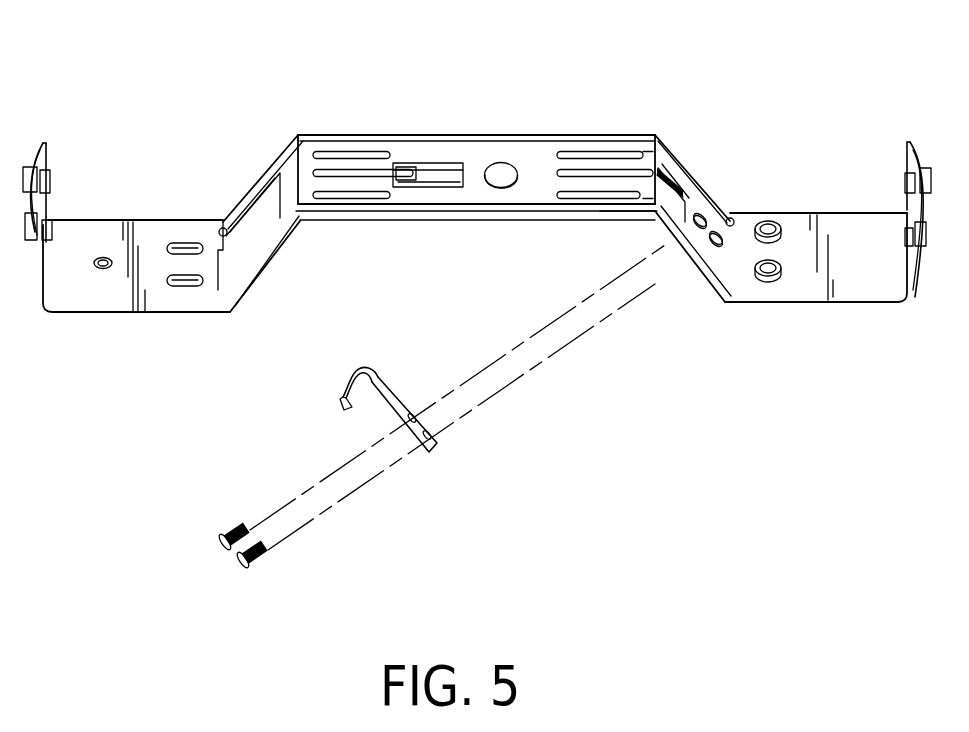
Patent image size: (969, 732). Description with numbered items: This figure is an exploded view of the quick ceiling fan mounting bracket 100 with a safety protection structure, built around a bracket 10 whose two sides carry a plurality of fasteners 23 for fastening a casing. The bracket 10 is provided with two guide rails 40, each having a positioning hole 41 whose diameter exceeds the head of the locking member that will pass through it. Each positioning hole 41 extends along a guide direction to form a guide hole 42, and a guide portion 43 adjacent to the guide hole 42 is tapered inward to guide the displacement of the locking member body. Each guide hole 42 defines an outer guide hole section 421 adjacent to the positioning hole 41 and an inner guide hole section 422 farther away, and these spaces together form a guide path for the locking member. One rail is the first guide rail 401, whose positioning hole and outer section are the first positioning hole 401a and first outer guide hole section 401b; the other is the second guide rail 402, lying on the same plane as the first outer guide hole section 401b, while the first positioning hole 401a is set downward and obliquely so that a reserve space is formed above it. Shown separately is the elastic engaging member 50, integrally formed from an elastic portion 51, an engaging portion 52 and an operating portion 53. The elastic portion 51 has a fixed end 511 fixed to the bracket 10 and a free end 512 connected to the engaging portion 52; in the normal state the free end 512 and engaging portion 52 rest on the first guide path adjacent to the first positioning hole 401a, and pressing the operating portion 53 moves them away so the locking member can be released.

The bracket 10 is at (847, 213).
The fasteners 23 is at (25, 167).
The guide rails 40 is at (423, 158).
The positioning hole 41 is at (452, 175).
The guide hole 42 is at (327, 174).
The guide portion 43 is at (403, 165).
The elastic engaging member 50 is at (398, 441).
The elastic portion 51 is at (423, 443).
The engaging portion 52 is at (357, 373).
The operating portion 53 is at (340, 402).
The quick ceiling fan mounting bracket 100 is at (147, 221).
The first guide rail 401 is at (598, 178).
The first positioning hole 401a is at (682, 195).
The first outer guide hole section 401b is at (620, 188).
The second guide rail 402 is at (430, 186).
The outer guide hole section 421 is at (360, 177).
The inner guide hole section 422 is at (312, 155).
The fixed end 511 is at (437, 445).
The free end 512 is at (393, 390).